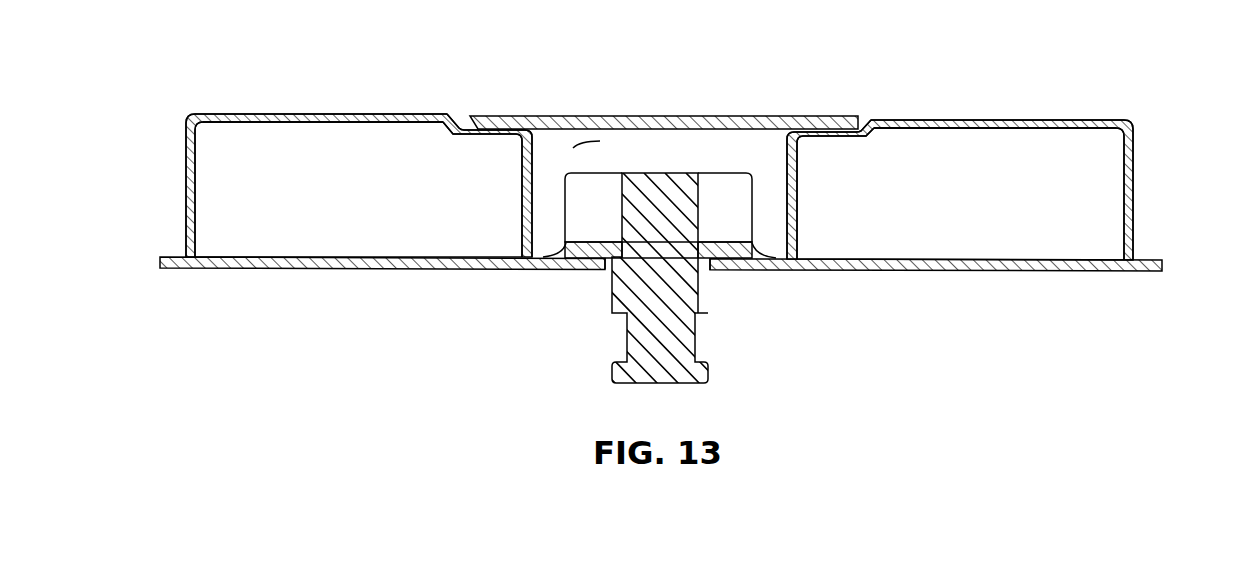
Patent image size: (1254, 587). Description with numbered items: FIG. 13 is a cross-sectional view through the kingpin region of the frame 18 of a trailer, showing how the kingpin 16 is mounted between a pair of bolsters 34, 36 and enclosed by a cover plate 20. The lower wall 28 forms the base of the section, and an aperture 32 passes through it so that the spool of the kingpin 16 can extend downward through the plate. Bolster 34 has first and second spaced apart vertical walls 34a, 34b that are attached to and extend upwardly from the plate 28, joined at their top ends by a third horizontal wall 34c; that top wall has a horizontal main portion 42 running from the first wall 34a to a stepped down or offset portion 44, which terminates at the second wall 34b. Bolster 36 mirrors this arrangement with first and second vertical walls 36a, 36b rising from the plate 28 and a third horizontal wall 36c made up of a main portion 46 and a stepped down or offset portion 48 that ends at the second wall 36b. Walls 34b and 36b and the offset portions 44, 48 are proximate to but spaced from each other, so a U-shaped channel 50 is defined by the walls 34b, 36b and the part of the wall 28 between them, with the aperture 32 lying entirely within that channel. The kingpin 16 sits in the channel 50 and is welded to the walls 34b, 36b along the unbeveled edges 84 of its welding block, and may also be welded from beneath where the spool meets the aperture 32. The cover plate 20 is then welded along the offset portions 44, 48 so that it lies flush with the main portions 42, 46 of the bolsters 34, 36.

The kingpin 16 is at (753, 208).
The frame 18 is at (700, 345).
The cover plate 20 is at (658, 116).
The lower wall 28 is at (360, 262).
The aperture 32 is at (608, 280).
The bolster 34 is at (301, 130).
The first vertical wall 34a is at (187, 192).
The second vertical wall 34b is at (523, 215).
The third horizontal wall 34c is at (345, 114).
The bolster 36 is at (1005, 131).
The first vertical wall 36a is at (1135, 238).
The second vertical wall 36b is at (797, 245).
The third horizontal wall 36c is at (963, 120).
The horizontal main portion 42 is at (250, 123).
The stepped down or offset portion 44 is at (480, 135).
The horizontal main portion 46 is at (1020, 129).
The stepped down or offset portion 48 is at (835, 139).
The U-shaped channel 50 is at (583, 116).
The unbeveled edges 84 is at (540, 268).